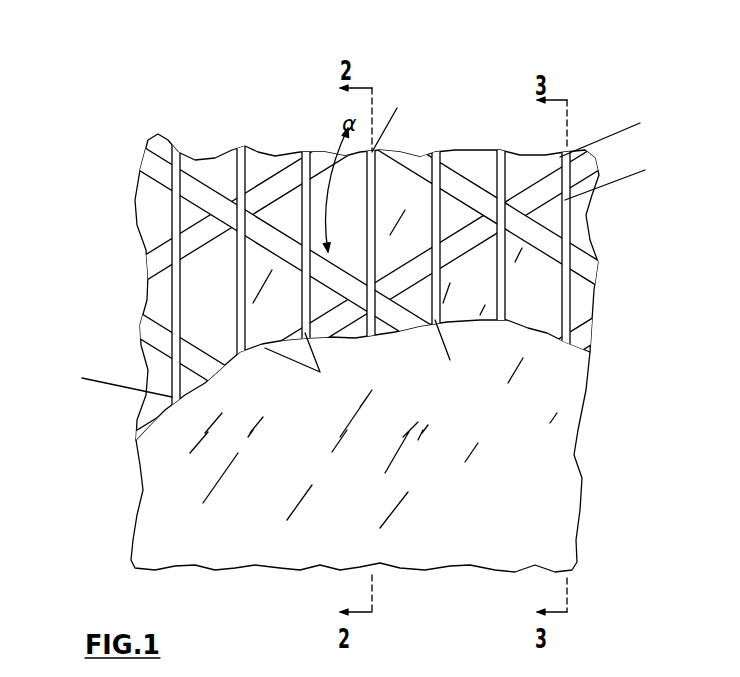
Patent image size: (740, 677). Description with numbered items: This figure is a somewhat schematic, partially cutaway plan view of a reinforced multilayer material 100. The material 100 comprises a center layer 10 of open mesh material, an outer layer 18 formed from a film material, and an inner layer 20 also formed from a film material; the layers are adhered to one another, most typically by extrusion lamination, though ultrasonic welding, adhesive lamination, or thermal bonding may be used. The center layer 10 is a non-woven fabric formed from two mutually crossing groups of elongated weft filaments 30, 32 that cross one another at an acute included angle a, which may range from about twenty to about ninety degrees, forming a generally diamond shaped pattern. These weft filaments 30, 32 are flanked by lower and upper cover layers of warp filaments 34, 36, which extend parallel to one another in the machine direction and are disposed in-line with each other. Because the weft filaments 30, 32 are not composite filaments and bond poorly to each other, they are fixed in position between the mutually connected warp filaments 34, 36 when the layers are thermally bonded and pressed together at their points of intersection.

The reinforced multilayer material 100 is at (515, 75).
The center layer 10 is at (463, 183).
The outer layer 18 is at (548, 462).
The inner layer 20 is at (359, 324).
The weft filaments 30 is at (158, 170).
The weft filaments 32 is at (155, 263).
The warp filaments 34 is at (364, 245).
The warp filaments 36 is at (242, 152).